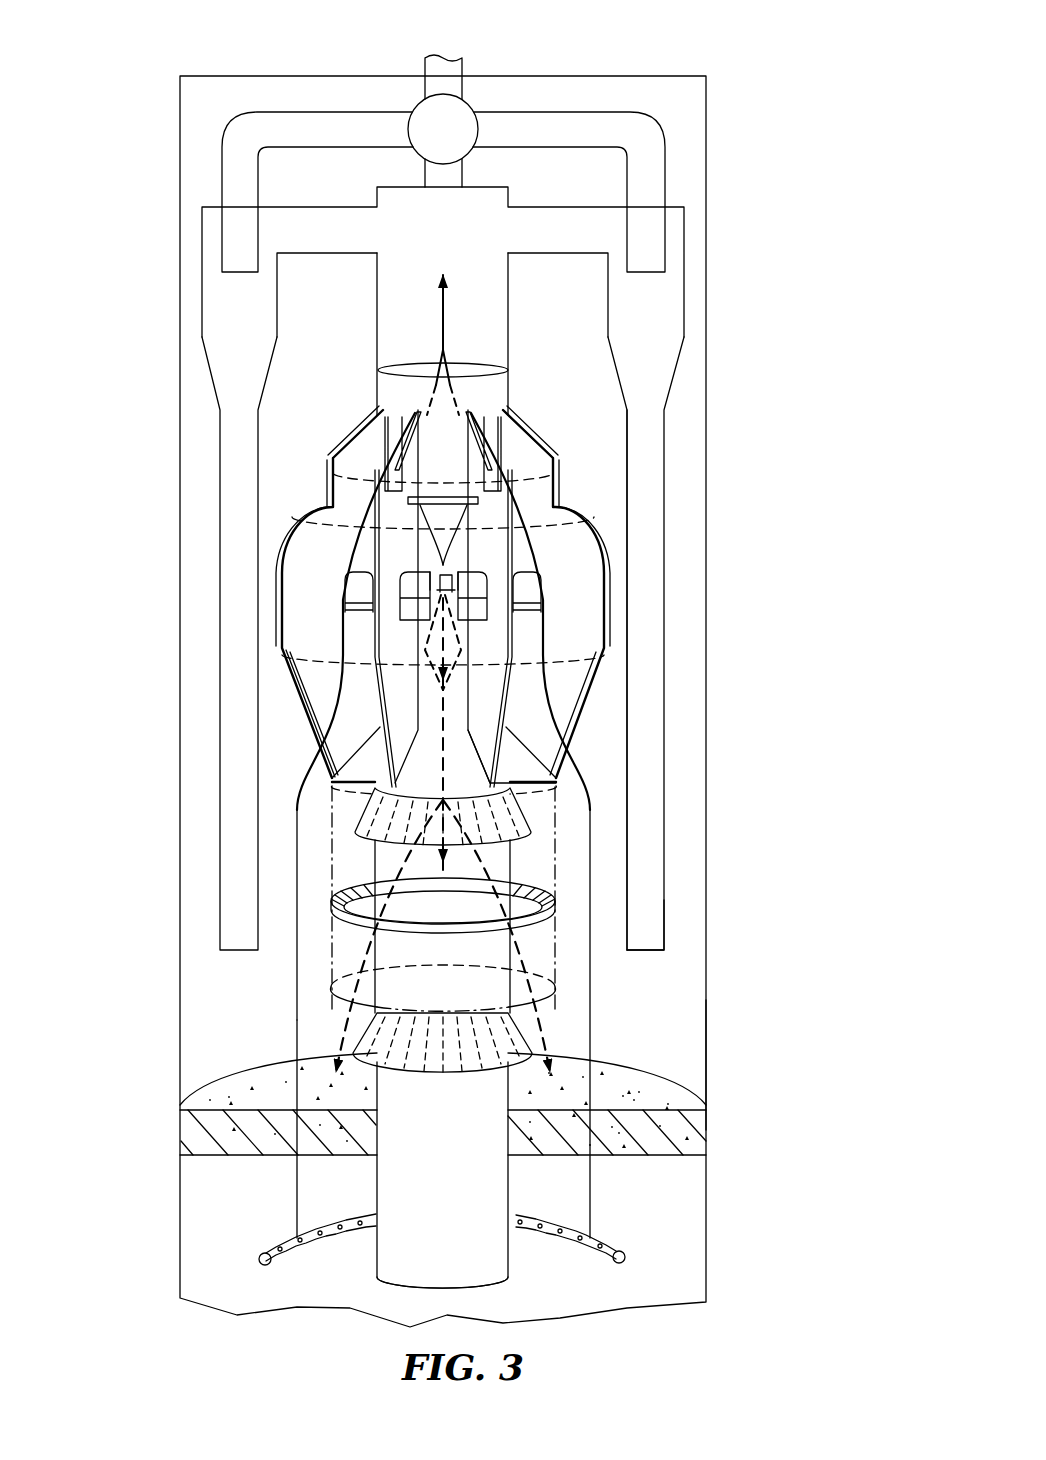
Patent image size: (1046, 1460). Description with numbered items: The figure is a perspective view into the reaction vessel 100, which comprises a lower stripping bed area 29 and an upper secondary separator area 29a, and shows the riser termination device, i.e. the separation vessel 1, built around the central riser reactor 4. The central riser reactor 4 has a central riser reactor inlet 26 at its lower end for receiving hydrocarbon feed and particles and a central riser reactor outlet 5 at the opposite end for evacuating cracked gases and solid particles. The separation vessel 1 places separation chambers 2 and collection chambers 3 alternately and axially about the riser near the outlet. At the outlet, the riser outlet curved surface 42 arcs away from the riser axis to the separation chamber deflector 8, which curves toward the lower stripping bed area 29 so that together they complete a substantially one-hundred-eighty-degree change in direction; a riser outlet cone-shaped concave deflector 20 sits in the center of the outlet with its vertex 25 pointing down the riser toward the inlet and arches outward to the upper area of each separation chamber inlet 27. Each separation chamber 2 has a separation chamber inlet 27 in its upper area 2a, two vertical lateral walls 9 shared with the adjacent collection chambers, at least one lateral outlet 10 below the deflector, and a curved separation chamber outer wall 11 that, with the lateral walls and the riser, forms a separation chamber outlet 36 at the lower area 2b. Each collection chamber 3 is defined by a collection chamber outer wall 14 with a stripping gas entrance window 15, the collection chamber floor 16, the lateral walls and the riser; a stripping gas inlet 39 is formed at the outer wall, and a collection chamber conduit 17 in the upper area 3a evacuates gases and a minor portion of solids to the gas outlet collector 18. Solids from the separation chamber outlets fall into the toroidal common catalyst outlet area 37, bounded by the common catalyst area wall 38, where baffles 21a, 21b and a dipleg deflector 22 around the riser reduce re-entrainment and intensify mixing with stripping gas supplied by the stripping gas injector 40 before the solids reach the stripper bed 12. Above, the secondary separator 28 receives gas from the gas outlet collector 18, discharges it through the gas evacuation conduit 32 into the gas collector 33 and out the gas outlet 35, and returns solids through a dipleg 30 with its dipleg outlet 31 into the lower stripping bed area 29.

The separation vessel 1 is at (612, 560).
The separation chamber 2 is at (470, 690).
The upper area of the separation chamber 2a is at (400, 507).
The lower area of the separation chamber 2b is at (576, 790).
The collection chamber 3 is at (580, 627).
The upper area of the collection chamber 3a is at (510, 435).
The central riser reactor 4 is at (430, 1192).
The central riser reactor outlet 5 is at (457, 552).
The separation chamber deflector 8 is at (400, 607).
The vertical lateral wall 9 is at (355, 727).
The lateral outlet 10 is at (545, 625).
The separation chamber outer wall 11 is at (400, 683).
The stripper bed 12 is at (655, 1100).
The collection chamber outer wall 14 is at (305, 625).
The stripping gas entrance window 15 is at (362, 771).
The collection chamber floor 16 is at (360, 788).
The collection chamber conduit 17 is at (387, 437).
The gas outlet collector 18 is at (480, 320).
The riser outlet cone-shaped concave deflector 20 is at (433, 533).
The baffle 21a is at (373, 921).
The baffle 21b is at (345, 790).
The dipleg deflector 22 is at (390, 1030).
The vertex 25 is at (541, 600).
The central riser reactor inlet 26 is at (465, 1300).
The separation chamber inlet 27 is at (420, 560).
The secondary separator 28 is at (684, 283).
The lower stripping bed area 29 is at (680, 1015).
The upper secondary separator area 29a is at (323, 307).
The dipleg 30 is at (648, 852).
The dipleg outlet 31 is at (648, 960).
The gas evacuation conduit 32 is at (640, 155).
The gas collector 33 is at (455, 118).
The gas outlet 35 is at (446, 73).
The separation chamber outlet 36 is at (425, 775).
The common catalyst outlet area 37 is at (540, 960).
The common catalyst area wall 38 is at (555, 868).
The stripping gas inlet 39 is at (565, 669).
The stripping gas injector 40 is at (292, 1235).
The riser outlet curved surface 42 is at (430, 620).
The reaction vessel 100 is at (718, 1067).